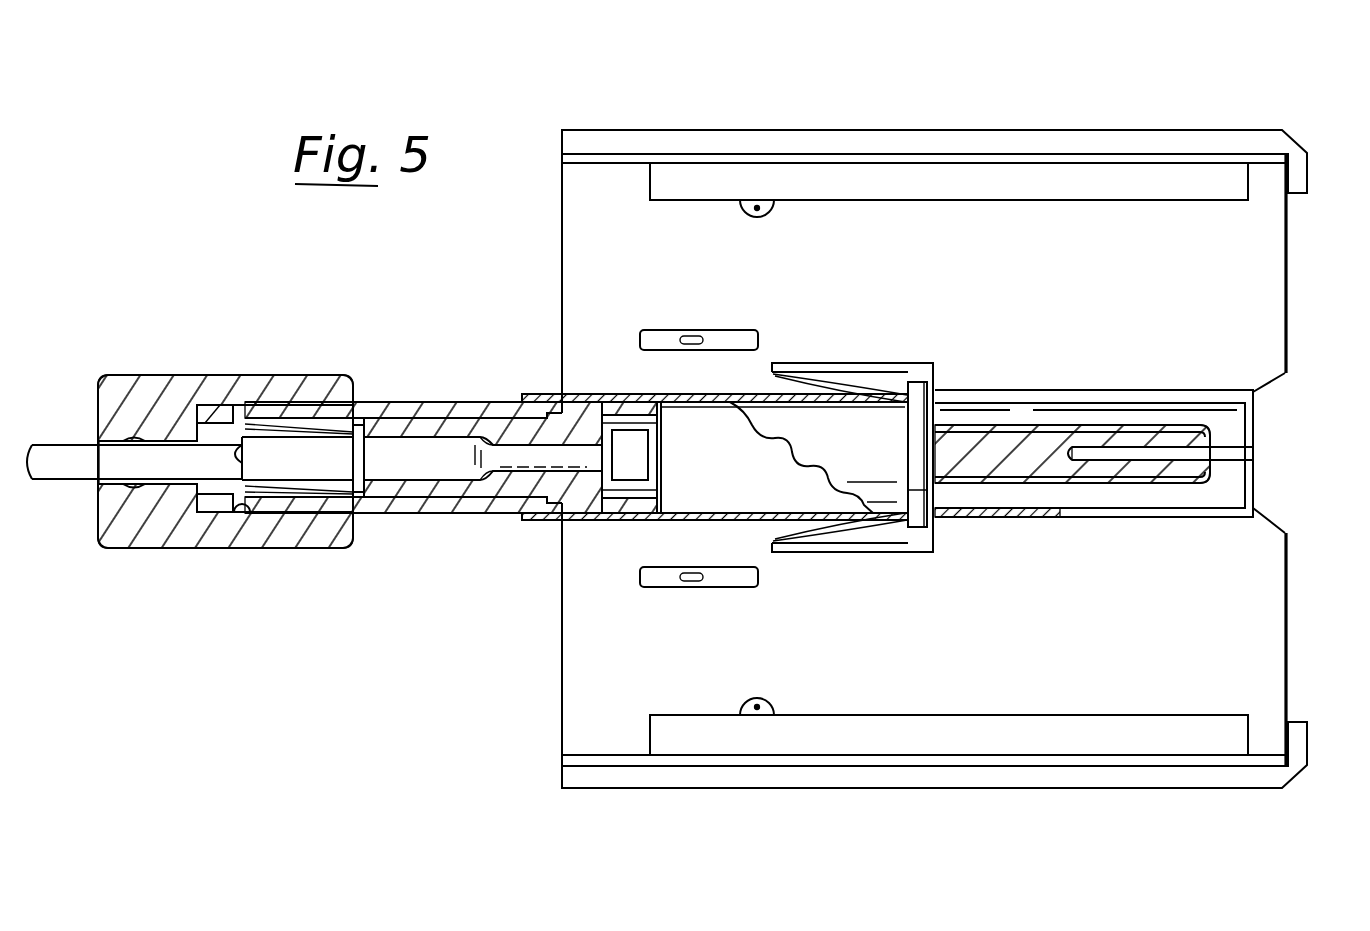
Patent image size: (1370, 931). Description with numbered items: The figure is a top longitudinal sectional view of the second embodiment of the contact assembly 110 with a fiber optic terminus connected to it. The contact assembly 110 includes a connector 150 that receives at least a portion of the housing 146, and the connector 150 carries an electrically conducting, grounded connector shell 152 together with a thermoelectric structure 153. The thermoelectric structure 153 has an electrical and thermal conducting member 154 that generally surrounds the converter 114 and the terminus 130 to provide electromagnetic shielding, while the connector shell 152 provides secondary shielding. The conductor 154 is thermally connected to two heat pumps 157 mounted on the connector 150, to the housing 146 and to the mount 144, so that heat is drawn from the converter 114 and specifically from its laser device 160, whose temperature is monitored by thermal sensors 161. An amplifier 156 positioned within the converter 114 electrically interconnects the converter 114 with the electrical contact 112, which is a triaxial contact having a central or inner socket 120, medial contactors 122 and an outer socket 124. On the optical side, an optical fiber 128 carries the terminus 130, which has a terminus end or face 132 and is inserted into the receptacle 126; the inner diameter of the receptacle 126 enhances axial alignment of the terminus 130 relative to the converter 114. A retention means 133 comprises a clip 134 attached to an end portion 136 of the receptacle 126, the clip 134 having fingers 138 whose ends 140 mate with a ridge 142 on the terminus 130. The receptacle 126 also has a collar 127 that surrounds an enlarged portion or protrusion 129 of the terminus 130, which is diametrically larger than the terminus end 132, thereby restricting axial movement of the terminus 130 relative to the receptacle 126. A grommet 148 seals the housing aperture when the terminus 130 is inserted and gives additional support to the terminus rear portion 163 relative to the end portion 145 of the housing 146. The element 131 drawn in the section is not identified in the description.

The contact assembly 110 is at (847, 106).
The electrical contact 112 is at (1045, 521).
The converter 114 is at (561, 522).
The central or inner socket 120 is at (1213, 457).
The medial contactors 122 is at (1153, 487).
The outer socket 124 is at (988, 511).
The receptacle 126 is at (420, 428).
The collar 127 is at (748, 428).
The optical fiber 128 is at (72, 490).
The enlarged portion 129 is at (440, 452).
The terminus 130 is at (466, 484).
The plunger cylinder 131 is at (431, 483).
The terminus end 132 is at (608, 486).
The retention means 133 is at (270, 505).
The clip 134 is at (312, 417).
The end portion of the receptacle 136 is at (207, 506).
The fingers 138 is at (335, 495).
The finger ends 140 is at (340, 528).
The ridge 142 is at (380, 400).
The mount 144 is at (628, 517).
The end portion of the housing 145 is at (216, 403).
The housing 146 is at (751, 528).
The grommet 148 is at (129, 385).
The connector 150 is at (1200, 120).
The connector shell 152 is at (709, 148).
The thermoelectric structure 153 is at (1262, 293).
The conducting member 154 is at (631, 232).
The amplifier 156 is at (668, 522).
The heat pumps 157 is at (668, 177).
The laser device 160 is at (650, 448).
The thermal sensors 161 is at (753, 372).
The terminus rear portion 163 is at (760, 365).